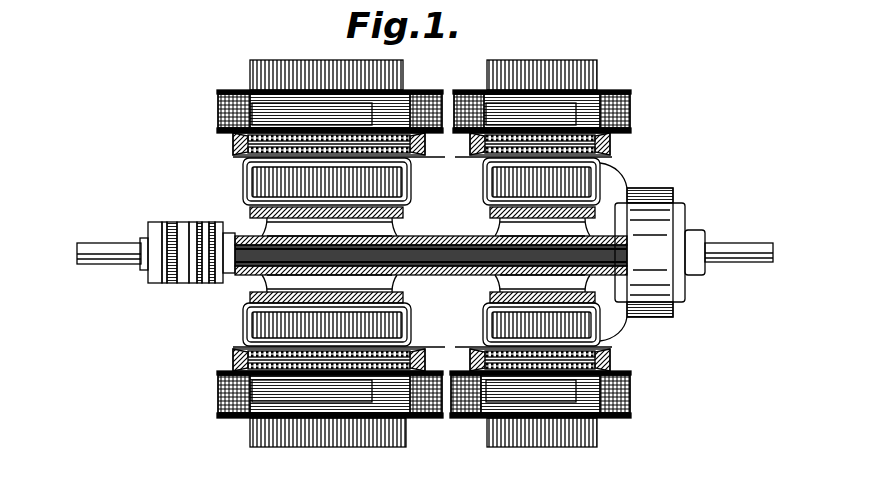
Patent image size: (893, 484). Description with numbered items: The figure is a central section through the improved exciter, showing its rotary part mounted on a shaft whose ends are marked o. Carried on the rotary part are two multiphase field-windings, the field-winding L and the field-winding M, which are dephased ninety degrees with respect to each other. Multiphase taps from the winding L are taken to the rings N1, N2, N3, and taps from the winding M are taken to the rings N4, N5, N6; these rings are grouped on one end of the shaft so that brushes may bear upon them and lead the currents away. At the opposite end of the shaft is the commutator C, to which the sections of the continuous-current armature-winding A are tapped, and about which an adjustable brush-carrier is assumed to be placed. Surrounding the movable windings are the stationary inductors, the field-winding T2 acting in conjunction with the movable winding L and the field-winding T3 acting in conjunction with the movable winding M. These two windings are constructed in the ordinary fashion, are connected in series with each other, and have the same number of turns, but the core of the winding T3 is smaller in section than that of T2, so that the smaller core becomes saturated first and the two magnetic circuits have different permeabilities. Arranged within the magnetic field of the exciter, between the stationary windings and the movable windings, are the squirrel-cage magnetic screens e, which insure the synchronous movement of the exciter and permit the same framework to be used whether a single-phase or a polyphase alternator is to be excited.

The multiphase field-winding L is at (327, 252).
The multiphase field-winding M is at (541, 252).
The field-winding T2 is at (325, 405).
The field-winding T3 is at (537, 405).
The squirrel-cage magnetic screen e is at (419, 252).
The shaft o is at (421, 255).
The ring N1 is at (158, 277).
The ring N2 is at (170, 277).
The ring N3 is at (185, 280).
The ring N4 is at (190, 225).
The ring N5 is at (205, 225).
The ring N6 is at (215, 225).
The commutator C is at (660, 263).
The armature-winding A is at (621, 262).